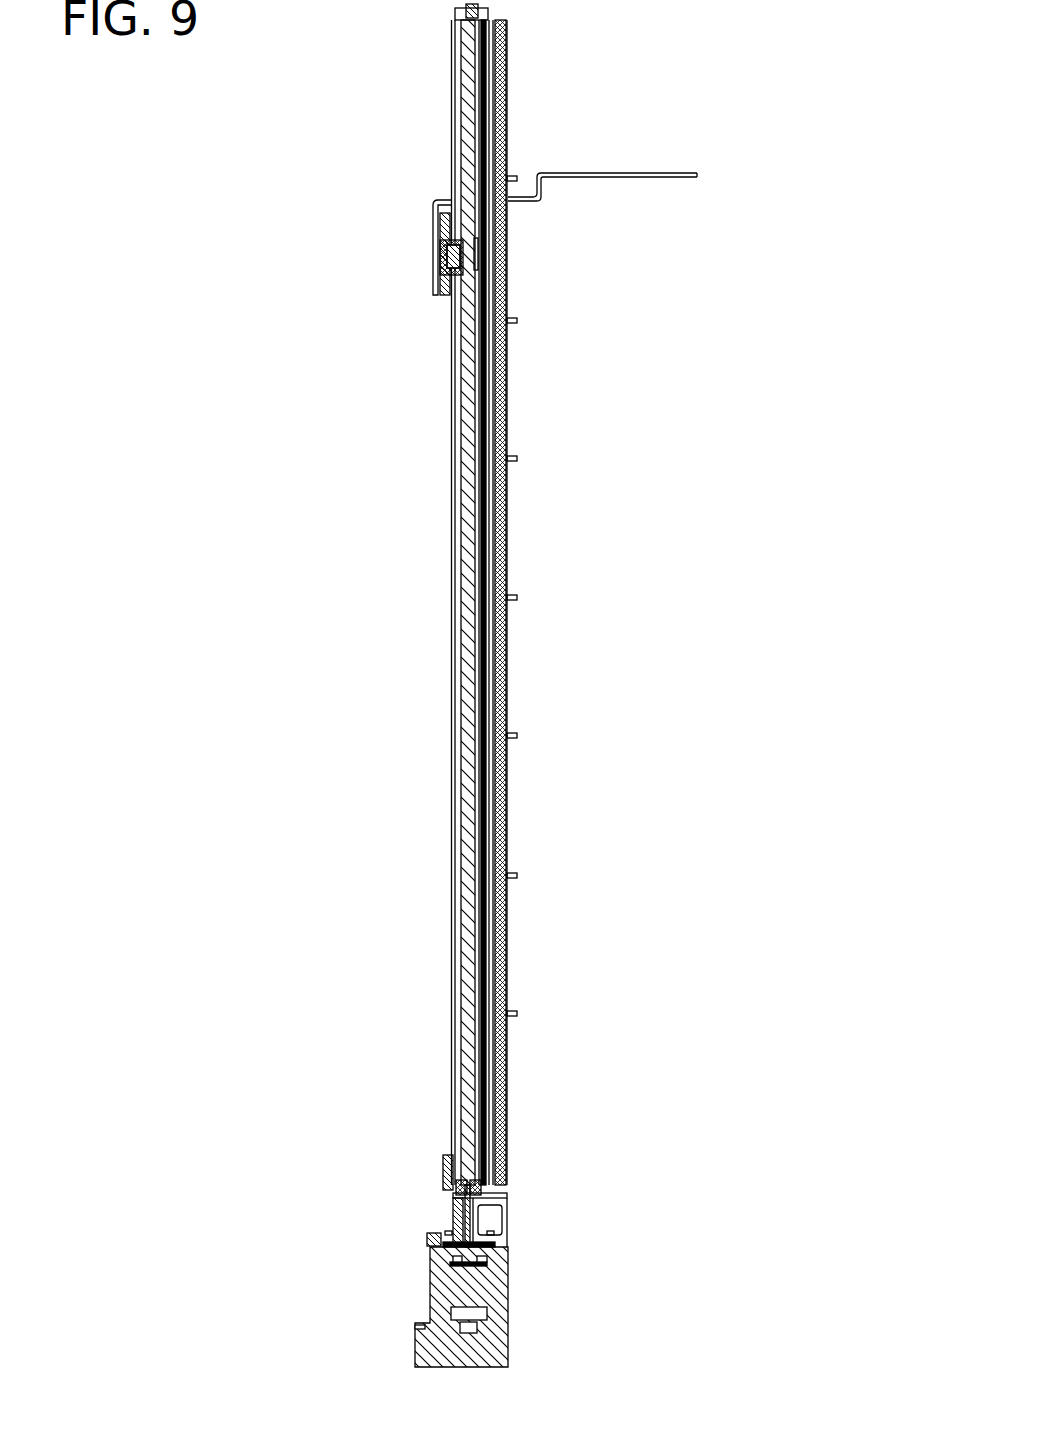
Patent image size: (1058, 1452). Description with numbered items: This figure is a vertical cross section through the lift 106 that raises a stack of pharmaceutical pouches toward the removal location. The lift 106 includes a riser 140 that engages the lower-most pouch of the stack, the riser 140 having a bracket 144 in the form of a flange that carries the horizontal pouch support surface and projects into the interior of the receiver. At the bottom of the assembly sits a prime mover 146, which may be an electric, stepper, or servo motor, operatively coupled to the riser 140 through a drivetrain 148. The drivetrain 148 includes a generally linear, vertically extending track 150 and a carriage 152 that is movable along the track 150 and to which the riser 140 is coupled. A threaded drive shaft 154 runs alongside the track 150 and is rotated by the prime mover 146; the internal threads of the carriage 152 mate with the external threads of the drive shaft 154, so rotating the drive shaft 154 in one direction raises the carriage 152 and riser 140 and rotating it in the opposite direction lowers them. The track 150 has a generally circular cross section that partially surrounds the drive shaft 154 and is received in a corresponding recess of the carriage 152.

The lift 106 is at (843, 105).
The riser 140 is at (552, 212).
The bracket 144 is at (632, 178).
The prime mover 146 is at (500, 1298).
The drivetrain 148 is at (548, 508).
The track 150 is at (452, 730).
The carriage 152 is at (433, 253).
The threaded drive shaft 154 is at (468, 672).